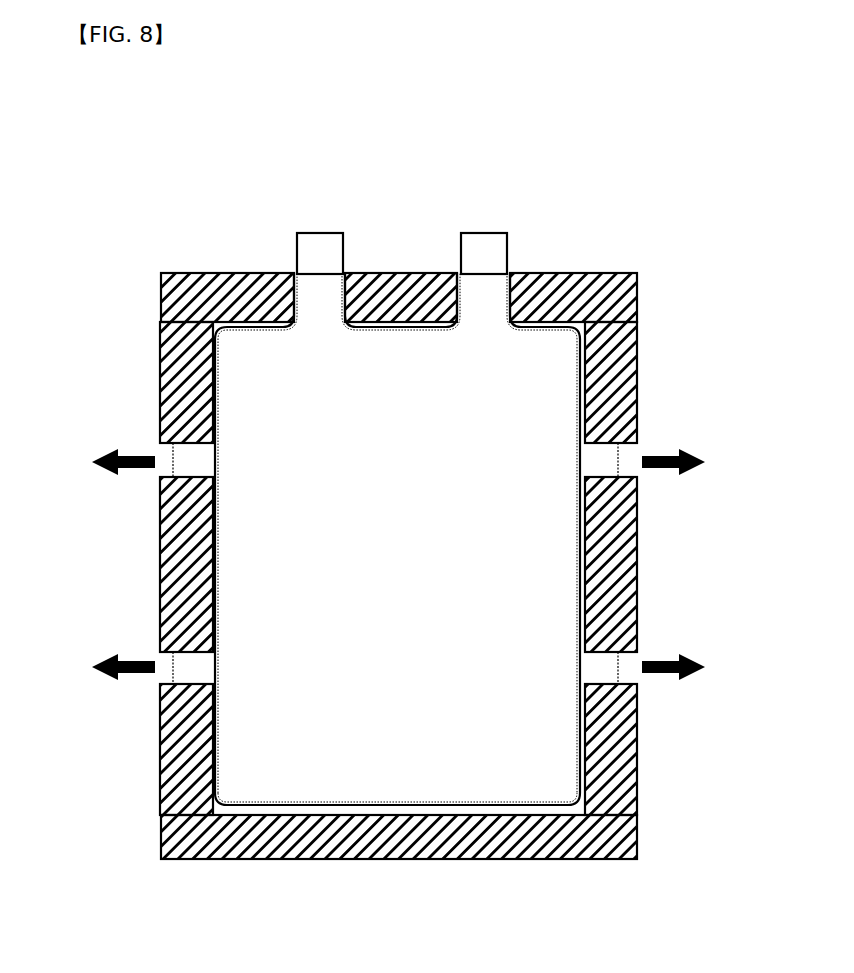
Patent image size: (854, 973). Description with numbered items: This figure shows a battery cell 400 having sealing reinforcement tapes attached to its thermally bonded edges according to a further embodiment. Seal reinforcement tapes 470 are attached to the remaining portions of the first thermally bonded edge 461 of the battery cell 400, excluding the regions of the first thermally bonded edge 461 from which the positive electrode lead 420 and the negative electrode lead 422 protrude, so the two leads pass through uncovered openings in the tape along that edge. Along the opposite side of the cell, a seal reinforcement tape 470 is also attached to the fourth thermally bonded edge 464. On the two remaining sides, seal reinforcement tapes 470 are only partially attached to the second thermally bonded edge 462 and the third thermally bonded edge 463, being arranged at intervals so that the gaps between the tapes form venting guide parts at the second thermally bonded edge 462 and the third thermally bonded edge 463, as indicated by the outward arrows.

The battery cell 400 is at (133, 140).
The positive electrode lead 420 is at (300, 232).
The negative electrode lead 422 is at (497, 232).
The first thermally bonded edge 461 is at (238, 326).
The second thermally bonded edge 462 is at (173, 682).
The third thermally bonded edge 463 is at (618, 672).
The fourth thermally bonded edge 464 is at (252, 812).
The seal reinforcement tape 470 is at (262, 296).